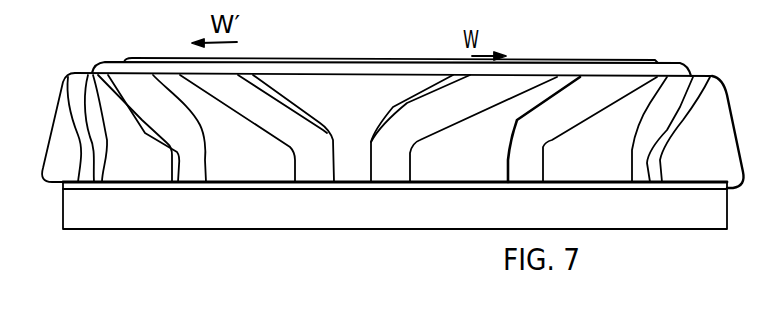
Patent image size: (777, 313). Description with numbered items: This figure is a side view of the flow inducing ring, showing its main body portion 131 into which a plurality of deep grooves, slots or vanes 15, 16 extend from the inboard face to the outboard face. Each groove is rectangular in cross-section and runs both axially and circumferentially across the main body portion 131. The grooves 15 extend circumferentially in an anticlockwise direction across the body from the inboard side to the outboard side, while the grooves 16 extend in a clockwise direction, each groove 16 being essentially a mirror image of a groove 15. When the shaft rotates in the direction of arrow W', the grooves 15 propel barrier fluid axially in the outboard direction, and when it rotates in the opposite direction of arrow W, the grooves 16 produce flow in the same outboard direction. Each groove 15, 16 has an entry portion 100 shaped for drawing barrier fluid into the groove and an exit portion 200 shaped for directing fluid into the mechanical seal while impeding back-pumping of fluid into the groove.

The groove 15 is at (77, 93).
The groove 16 is at (672, 95).
The entry portion 100 is at (217, 87).
The main body portion 131 is at (300, 90).
The exit portion 200 is at (318, 172).